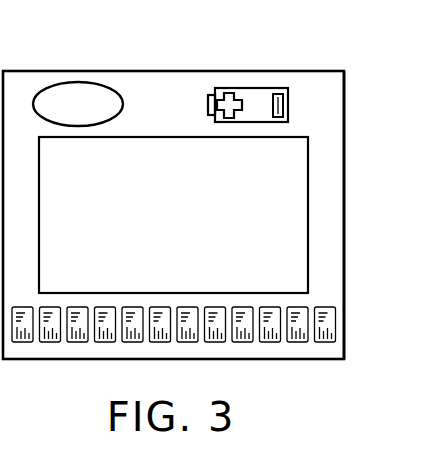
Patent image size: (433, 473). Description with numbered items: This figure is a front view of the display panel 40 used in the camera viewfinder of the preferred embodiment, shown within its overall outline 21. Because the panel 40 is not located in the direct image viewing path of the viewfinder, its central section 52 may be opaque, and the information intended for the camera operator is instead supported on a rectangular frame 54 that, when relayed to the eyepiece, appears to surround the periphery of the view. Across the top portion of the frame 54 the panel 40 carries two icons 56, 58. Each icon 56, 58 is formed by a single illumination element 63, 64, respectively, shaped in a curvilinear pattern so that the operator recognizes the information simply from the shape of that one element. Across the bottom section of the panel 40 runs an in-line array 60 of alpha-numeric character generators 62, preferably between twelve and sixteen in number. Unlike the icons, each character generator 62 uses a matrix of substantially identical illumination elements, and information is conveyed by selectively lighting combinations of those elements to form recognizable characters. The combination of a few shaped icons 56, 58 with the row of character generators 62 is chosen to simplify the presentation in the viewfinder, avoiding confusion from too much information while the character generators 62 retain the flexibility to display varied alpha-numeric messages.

The display device 21 is at (362, 82).
The rectangular frame 54 is at (335, 147).
The panel 40 is at (345, 192).
The central section 52 is at (290, 257).
The icon 56 is at (101, 84).
The illumination element 63 is at (48, 84).
The icon 58 is at (272, 88).
The illumination element 64 is at (242, 89).
The in-line array 60 is at (338, 330).
The alpha-numeric character generator 62 is at (297, 342).